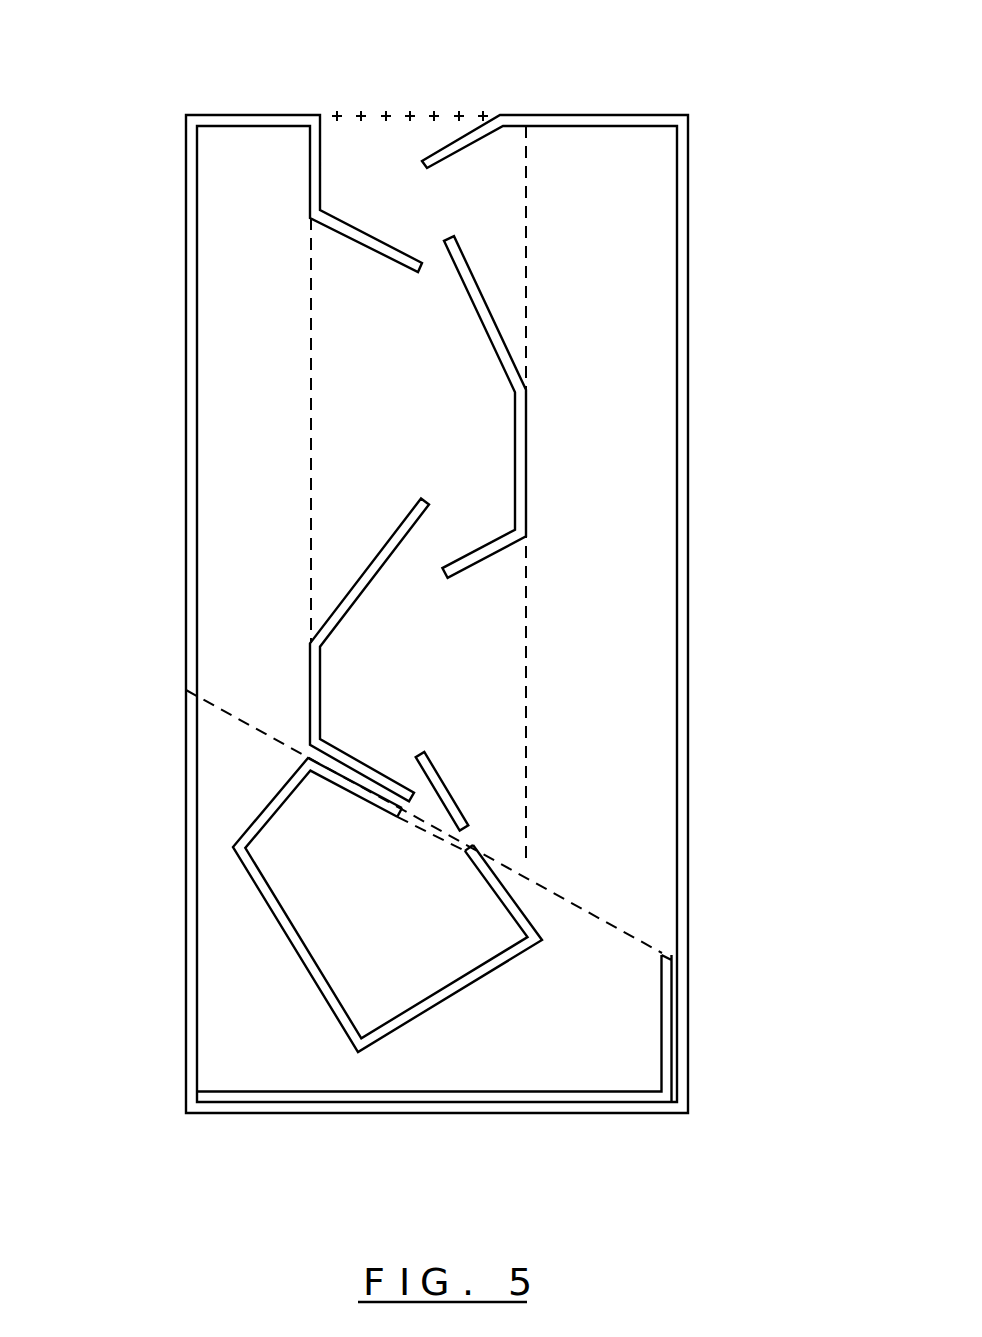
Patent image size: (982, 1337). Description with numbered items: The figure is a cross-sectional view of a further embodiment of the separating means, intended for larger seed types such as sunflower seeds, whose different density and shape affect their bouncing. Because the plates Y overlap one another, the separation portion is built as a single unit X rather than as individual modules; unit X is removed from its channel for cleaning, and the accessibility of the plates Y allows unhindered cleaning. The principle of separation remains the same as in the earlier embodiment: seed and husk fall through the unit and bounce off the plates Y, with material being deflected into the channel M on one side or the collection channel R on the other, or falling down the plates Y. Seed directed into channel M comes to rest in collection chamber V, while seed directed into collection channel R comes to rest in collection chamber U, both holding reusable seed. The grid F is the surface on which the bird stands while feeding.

The grid F is at (412, 115).
The channel M is at (607, 275).
The collection channel R is at (245, 390).
The single unit X is at (468, 447).
The plates Y is at (387, 567).
The collection chamber U is at (243, 1042).
The collection chamber V is at (632, 1042).